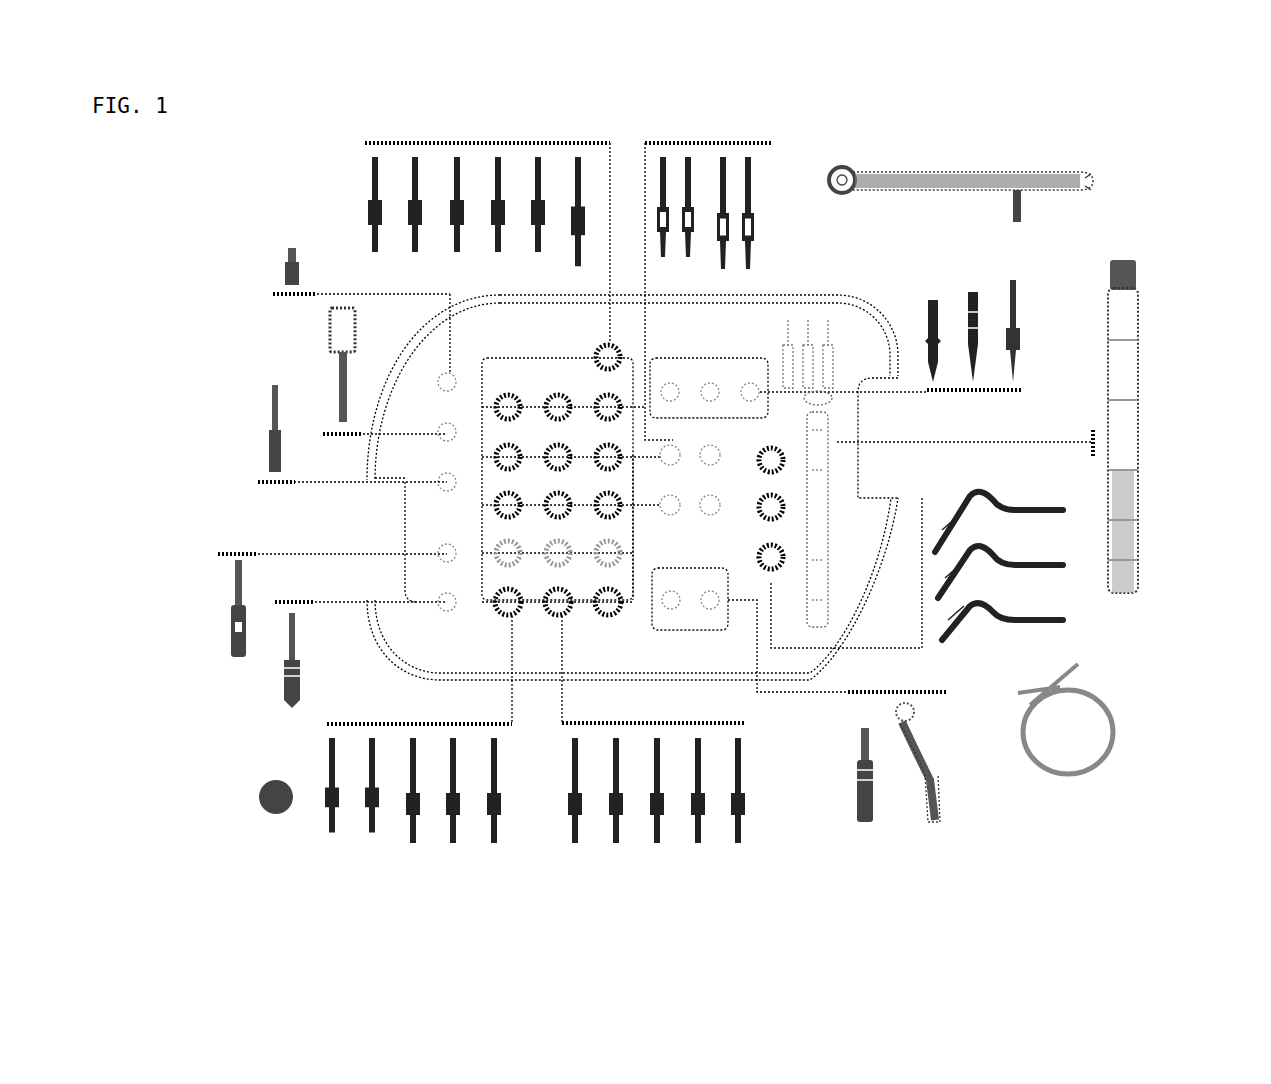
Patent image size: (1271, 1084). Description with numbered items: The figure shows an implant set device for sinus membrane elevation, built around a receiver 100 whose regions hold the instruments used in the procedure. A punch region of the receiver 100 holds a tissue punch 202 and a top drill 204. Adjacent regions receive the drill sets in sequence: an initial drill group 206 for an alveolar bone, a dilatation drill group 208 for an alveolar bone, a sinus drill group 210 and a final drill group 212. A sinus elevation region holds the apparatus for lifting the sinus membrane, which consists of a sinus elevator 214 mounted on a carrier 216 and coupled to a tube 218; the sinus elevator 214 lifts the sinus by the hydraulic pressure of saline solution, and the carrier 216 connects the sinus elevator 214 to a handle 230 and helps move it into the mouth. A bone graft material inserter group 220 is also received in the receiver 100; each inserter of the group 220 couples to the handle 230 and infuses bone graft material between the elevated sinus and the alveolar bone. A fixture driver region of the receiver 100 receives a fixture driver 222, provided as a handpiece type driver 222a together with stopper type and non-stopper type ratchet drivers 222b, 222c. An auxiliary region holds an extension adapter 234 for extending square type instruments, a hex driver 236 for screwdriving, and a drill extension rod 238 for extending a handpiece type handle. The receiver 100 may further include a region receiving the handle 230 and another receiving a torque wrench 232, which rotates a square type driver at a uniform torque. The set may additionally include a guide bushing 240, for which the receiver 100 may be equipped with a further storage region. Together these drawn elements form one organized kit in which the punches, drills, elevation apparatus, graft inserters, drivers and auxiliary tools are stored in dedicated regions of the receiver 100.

The receiver 100 is at (812, 286).
The tissue punch 202 is at (228, 612).
The top drill 204 is at (305, 682).
The initial drill group for an alveolar bone 206 is at (417, 850).
The dilatation drill group for an alveolar bone 208 is at (660, 850).
The sinus drill group 210 is at (502, 140).
The final drill group 212 is at (712, 140).
The sinus elevator 214 is at (866, 822).
The carrier 216 is at (940, 812).
The tube 218 is at (1081, 774).
The bone graft material inserter group 220 is at (1082, 636).
The fixture driver 222 is at (1066, 256).
The handpiece type driver 222a is at (933, 298).
The stopper type driver 222b is at (973, 290).
The non-stopper type driver 222c is at (1015, 282).
The handle 230 is at (1140, 382).
The torque wrench 232 is at (1057, 172).
The extension adapter 234 is at (282, 275).
The hex driver 236 is at (330, 337).
The drill extension rod 238 is at (270, 433).
The guide bushing 240 is at (261, 790).